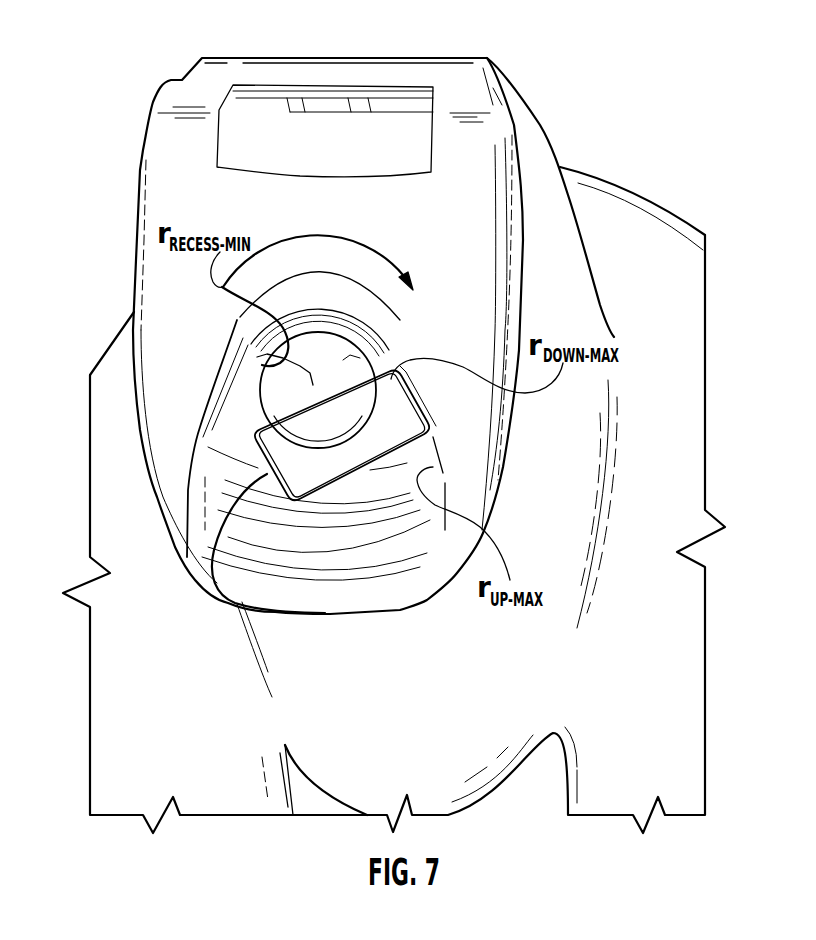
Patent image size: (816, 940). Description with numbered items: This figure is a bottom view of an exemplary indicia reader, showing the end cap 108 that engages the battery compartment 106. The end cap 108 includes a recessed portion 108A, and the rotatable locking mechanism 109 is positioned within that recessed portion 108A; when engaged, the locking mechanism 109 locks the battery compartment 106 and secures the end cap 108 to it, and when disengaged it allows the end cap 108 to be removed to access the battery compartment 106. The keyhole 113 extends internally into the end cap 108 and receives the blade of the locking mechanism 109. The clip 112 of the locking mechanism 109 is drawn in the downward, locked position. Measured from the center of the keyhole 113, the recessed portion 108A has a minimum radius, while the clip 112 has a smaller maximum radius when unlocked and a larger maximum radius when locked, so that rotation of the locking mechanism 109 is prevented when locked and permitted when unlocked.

The battery compartment 106 is at (533, 228).
The end cap 108 is at (172, 208).
The recessed portion 108A is at (239, 432).
The locking mechanism 109 is at (433, 427).
The clip 112 is at (268, 482).
The keyhole 113 is at (399, 354).